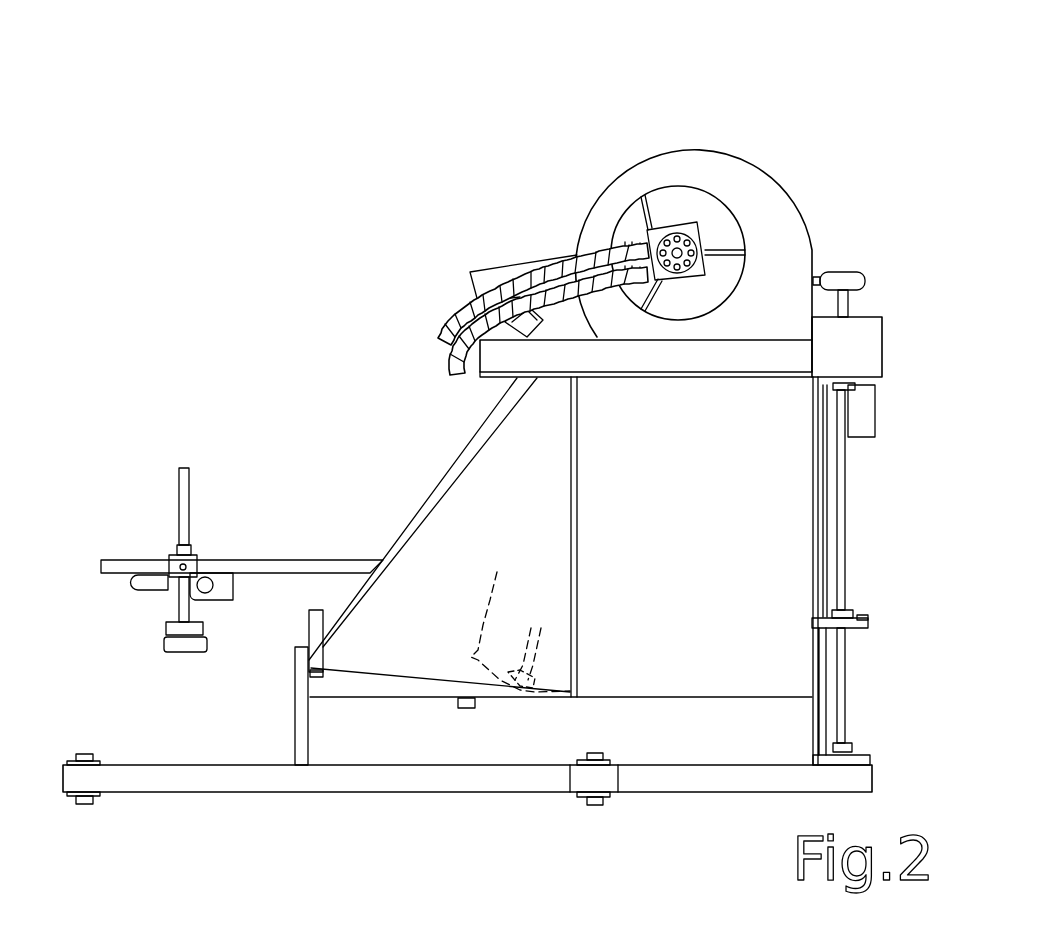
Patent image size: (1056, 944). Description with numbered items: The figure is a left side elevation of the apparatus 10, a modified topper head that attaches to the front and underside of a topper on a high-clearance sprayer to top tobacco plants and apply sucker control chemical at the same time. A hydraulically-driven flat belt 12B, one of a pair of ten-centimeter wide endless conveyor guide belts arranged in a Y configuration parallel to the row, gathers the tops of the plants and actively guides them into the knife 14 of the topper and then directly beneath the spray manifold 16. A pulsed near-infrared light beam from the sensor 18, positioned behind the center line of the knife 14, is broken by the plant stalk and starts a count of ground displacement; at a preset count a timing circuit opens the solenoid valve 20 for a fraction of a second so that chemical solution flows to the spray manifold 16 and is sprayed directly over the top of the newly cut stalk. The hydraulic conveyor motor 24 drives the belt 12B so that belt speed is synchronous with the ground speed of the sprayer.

The apparatus 10 is at (542, 463).
The flat belt 12B is at (478, 785).
The knife 14 is at (520, 617).
The spray manifold 16 is at (172, 654).
The sensor 18 is at (470, 708).
The solenoid valve 20 is at (205, 565).
The hydraulic conveyor motor 24 is at (865, 408).